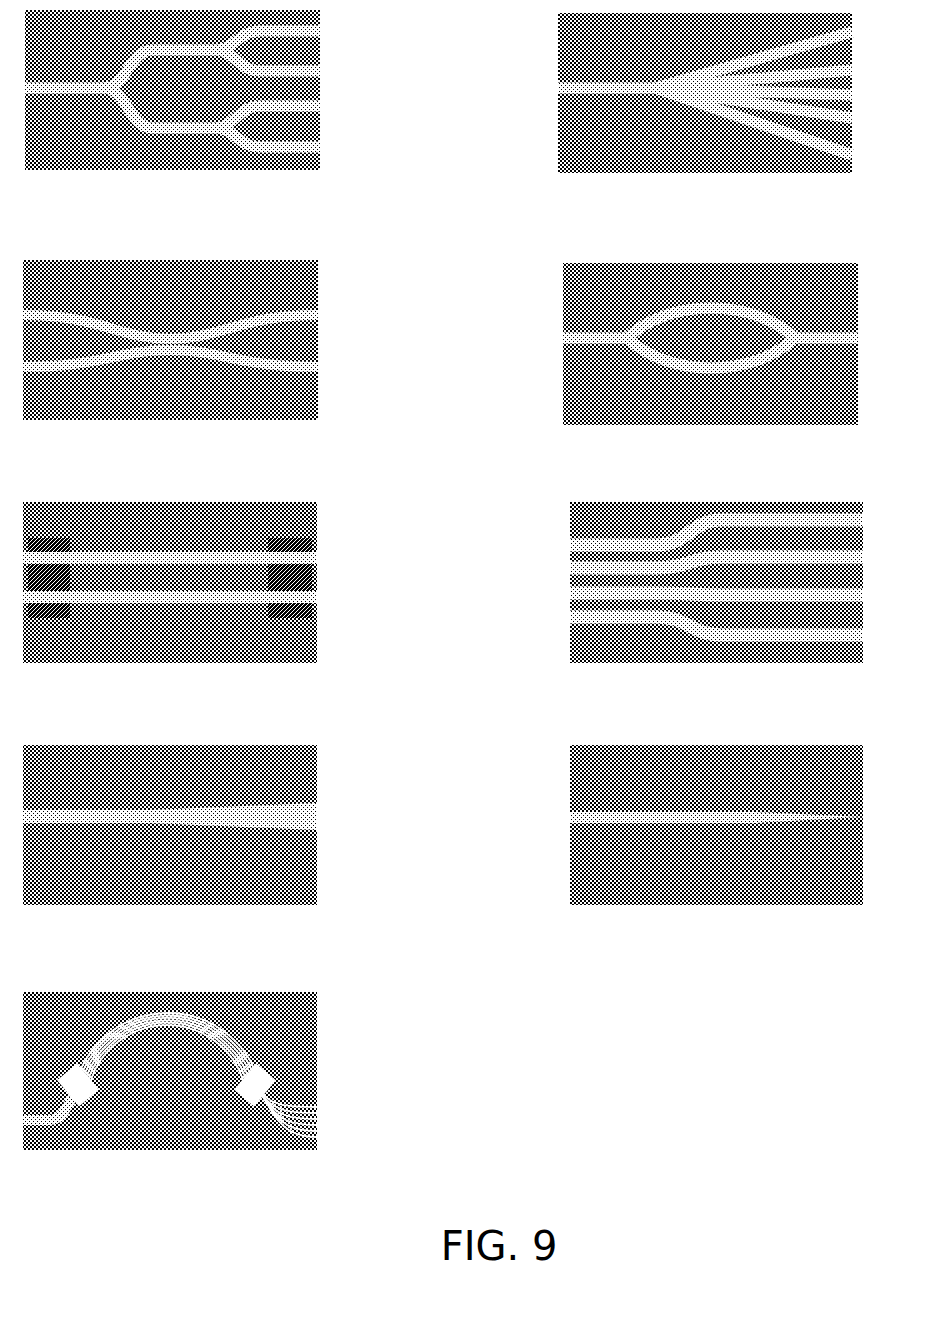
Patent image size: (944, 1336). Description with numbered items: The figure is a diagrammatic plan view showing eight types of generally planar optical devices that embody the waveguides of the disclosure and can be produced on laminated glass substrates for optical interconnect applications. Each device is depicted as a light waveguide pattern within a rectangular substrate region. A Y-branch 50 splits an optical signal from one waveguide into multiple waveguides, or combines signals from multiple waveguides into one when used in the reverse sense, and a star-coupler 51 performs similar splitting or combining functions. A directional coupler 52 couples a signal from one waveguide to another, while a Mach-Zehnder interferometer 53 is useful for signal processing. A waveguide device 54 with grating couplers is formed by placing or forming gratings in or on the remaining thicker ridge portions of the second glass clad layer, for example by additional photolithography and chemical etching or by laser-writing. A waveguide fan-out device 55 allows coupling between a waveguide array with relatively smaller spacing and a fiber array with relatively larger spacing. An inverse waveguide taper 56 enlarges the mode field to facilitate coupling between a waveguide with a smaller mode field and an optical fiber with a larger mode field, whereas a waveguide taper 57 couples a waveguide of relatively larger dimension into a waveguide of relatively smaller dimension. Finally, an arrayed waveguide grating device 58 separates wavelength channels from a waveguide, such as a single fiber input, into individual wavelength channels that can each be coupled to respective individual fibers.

The Y-branch 50 is at (284, 203).
The star-coupler 51 is at (814, 203).
The directional coupler 52 is at (284, 450).
The Mach-Zehnder interferometer 53 is at (814, 450).
The waveguide device with grating couplers 54 is at (284, 695).
The waveguide fan-out device 55 is at (814, 695).
The inverse waveguide taper 56 is at (284, 935).
The waveguide taper 57 is at (814, 935).
The arrayed waveguide grating device 58 is at (284, 1188).